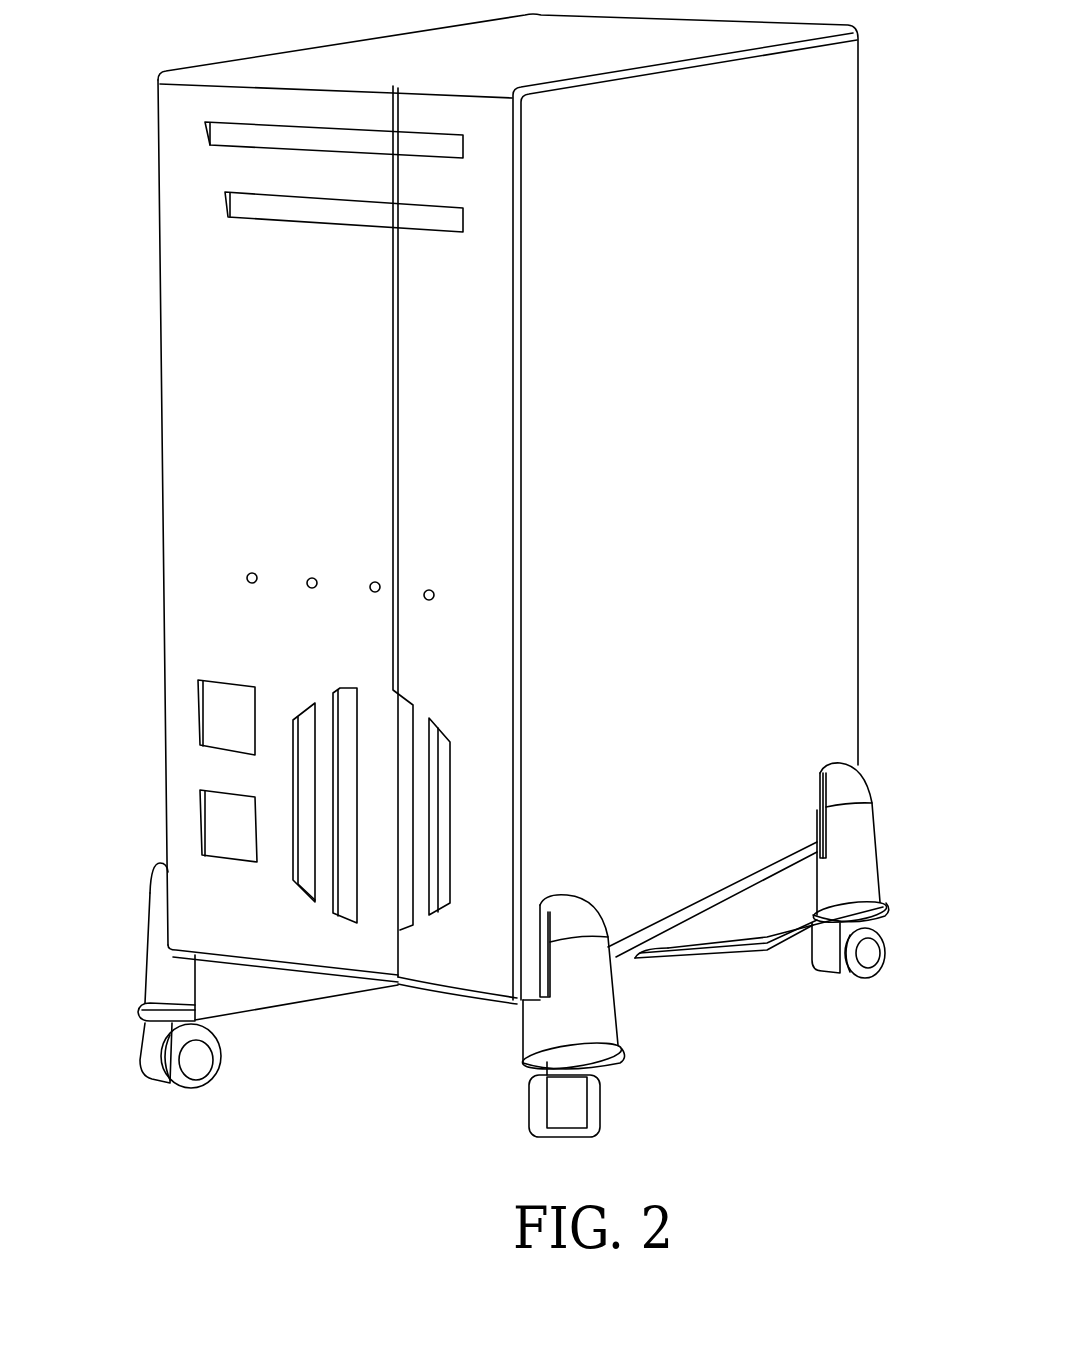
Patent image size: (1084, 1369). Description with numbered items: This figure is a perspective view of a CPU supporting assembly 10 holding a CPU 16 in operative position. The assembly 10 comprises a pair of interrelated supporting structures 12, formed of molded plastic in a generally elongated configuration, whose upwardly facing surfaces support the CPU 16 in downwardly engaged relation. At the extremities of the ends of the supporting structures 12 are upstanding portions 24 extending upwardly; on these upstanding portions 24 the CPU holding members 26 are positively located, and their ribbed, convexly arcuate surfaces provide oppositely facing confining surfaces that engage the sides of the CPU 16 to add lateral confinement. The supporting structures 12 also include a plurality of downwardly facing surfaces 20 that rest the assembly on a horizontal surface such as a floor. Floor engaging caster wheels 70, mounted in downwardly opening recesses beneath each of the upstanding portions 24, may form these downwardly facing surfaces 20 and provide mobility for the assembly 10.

The CPU supporting assembly 10 is at (517, 952).
The supporting structure 12 is at (697, 955).
The CPU 16 is at (598, 344).
The downwardly facing surface 20 is at (193, 1092).
The upstanding portion 24 is at (147, 896).
The CPU holding member 26 is at (550, 913).
The floor engaging caster wheel 70 is at (172, 1087).